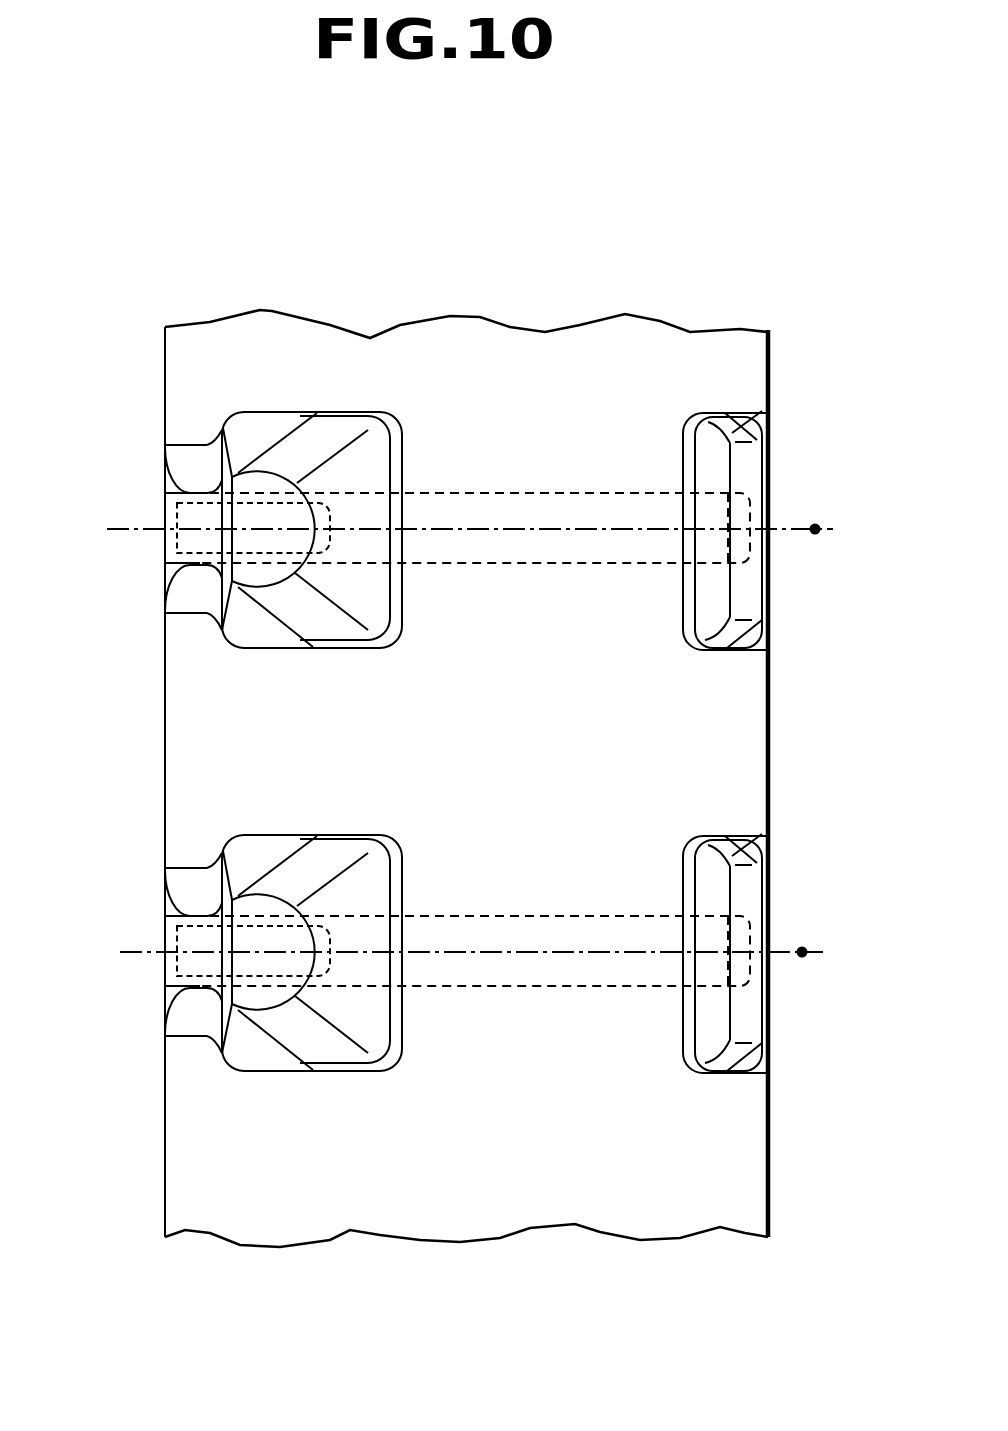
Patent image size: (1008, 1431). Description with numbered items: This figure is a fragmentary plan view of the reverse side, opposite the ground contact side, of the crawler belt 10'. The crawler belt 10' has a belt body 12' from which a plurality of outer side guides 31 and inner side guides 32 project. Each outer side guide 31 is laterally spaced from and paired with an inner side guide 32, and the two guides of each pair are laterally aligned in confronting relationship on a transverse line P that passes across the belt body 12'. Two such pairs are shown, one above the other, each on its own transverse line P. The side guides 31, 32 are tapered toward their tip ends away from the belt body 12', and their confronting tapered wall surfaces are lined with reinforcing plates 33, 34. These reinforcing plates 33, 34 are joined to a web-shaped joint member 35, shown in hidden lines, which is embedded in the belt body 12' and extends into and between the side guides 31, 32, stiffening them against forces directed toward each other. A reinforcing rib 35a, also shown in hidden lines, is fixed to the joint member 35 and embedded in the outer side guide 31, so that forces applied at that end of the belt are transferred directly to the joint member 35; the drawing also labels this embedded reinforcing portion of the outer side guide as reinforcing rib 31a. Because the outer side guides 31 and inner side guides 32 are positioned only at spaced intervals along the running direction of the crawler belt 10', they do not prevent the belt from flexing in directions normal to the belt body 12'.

The crawler belt 10' is at (366, 165).
The belt body 12' is at (466, 719).
The outer side guide 31 is at (207, 444).
The reinforcing rib 31a is at (200, 446).
The inner side guide 32 is at (768, 472).
The reinforcing plate 33 is at (240, 572).
The reinforcing plate 34 is at (750, 417).
The joint member 35 is at (521, 490).
The reinforcing rib 35a is at (177, 522).
The transverse line P is at (815, 529).